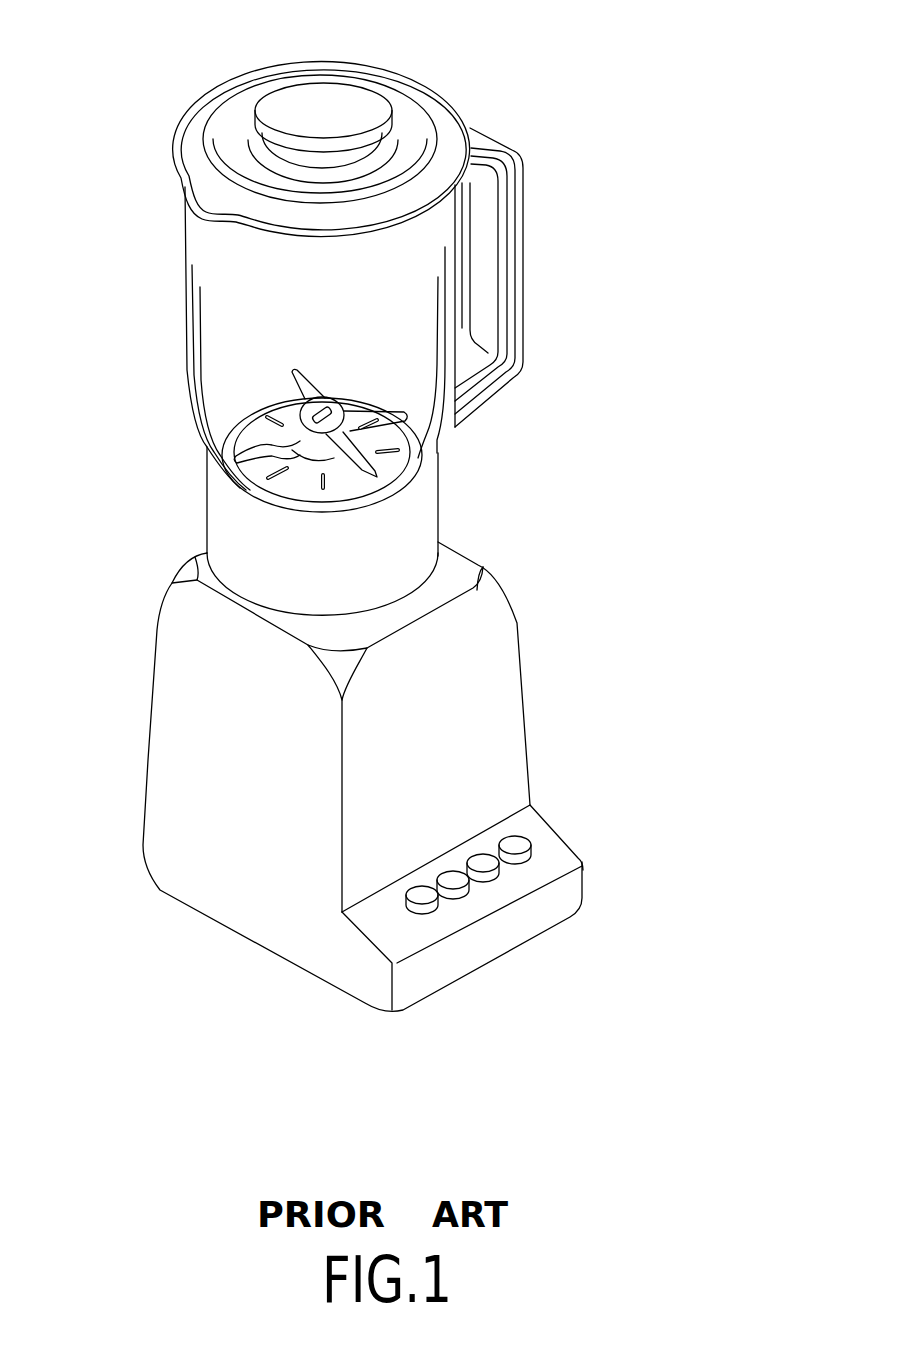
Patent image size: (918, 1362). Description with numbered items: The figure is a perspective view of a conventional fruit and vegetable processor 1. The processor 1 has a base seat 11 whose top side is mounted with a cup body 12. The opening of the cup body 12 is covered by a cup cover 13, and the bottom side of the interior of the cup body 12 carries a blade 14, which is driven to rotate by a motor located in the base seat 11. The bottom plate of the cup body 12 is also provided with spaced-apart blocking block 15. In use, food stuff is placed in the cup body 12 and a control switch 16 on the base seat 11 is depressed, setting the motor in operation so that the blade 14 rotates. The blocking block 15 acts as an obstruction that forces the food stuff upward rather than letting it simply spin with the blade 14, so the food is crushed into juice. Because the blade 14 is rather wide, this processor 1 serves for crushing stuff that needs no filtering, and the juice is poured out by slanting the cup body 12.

The processor 1 is at (557, 353).
The base seat 11 is at (510, 678).
The cup body 12 is at (210, 329).
The cup cover 13 is at (442, 128).
The blade 14 is at (260, 444).
The blocking block 15 is at (358, 462).
The control switch 16 is at (511, 843).